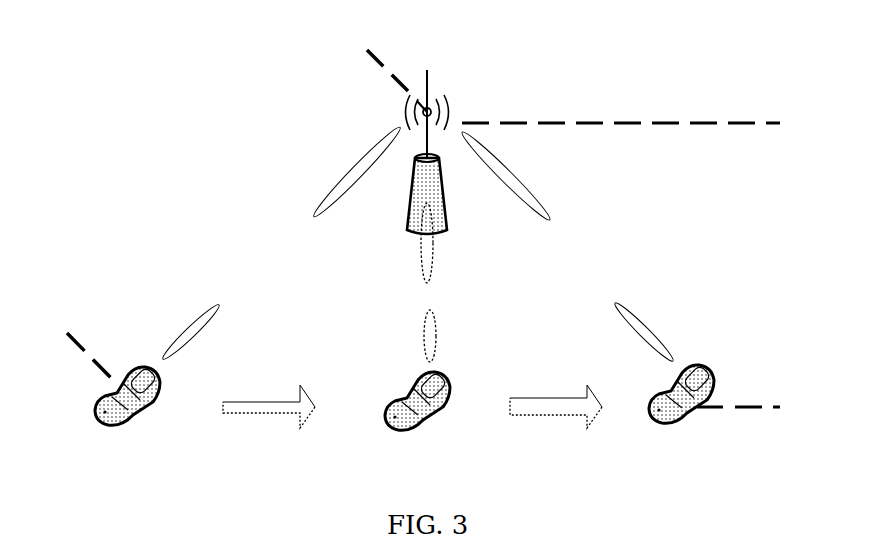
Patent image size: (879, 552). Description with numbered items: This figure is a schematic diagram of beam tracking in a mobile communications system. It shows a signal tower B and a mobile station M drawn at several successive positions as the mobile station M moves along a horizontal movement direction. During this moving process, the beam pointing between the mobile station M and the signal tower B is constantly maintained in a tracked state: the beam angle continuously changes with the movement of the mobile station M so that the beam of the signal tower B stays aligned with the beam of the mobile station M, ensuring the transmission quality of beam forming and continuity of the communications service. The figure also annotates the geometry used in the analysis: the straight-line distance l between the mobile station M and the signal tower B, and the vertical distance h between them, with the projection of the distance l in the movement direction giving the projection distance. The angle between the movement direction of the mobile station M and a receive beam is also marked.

The signal tower B is at (430, 173).
The mobile station M is at (127, 416).
The distance between the mobile station and the signal tower l is at (388, 72).
The vertical distance between the mobile station and the signal tower h is at (747, 123).